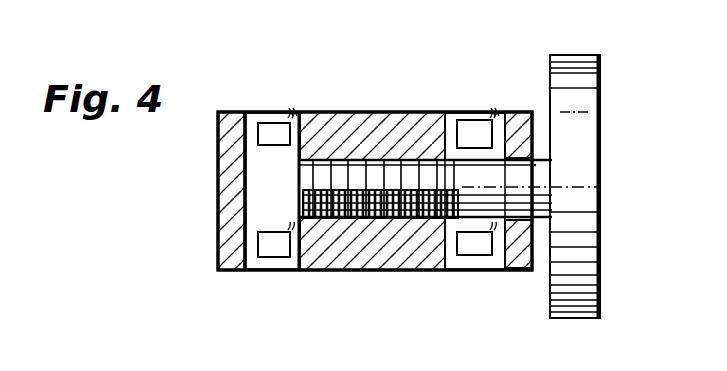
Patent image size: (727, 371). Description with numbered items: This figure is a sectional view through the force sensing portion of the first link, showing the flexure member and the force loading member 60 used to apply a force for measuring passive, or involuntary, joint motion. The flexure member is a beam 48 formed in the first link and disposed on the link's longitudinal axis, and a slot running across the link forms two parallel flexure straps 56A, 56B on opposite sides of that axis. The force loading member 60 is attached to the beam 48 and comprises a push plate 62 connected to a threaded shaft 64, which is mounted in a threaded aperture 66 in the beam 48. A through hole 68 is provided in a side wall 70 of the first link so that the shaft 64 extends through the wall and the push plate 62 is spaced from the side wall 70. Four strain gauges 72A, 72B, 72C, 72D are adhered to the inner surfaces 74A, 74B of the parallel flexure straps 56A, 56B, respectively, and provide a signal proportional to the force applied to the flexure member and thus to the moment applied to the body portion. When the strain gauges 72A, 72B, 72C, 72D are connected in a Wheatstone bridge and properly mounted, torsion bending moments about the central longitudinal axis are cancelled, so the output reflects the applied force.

The beam 48 is at (347, 110).
The flexure strap 56A is at (257, 110).
The flexure strap 56B is at (450, 110).
The force loading member 60 is at (528, 52).
The push plate 62 is at (598, 102).
The threaded shaft 64 is at (375, 225).
The threaded aperture 66 is at (317, 168).
The through hole 68 is at (522, 110).
The side wall 70 is at (533, 247).
The strain gauge 72A is at (258, 137).
The strain gauge 72B is at (258, 243).
The strain gauge 72C is at (465, 125).
The strain gauge 72D is at (490, 253).
The inner surface 74A is at (283, 194).
The inner surface 74B is at (457, 230).